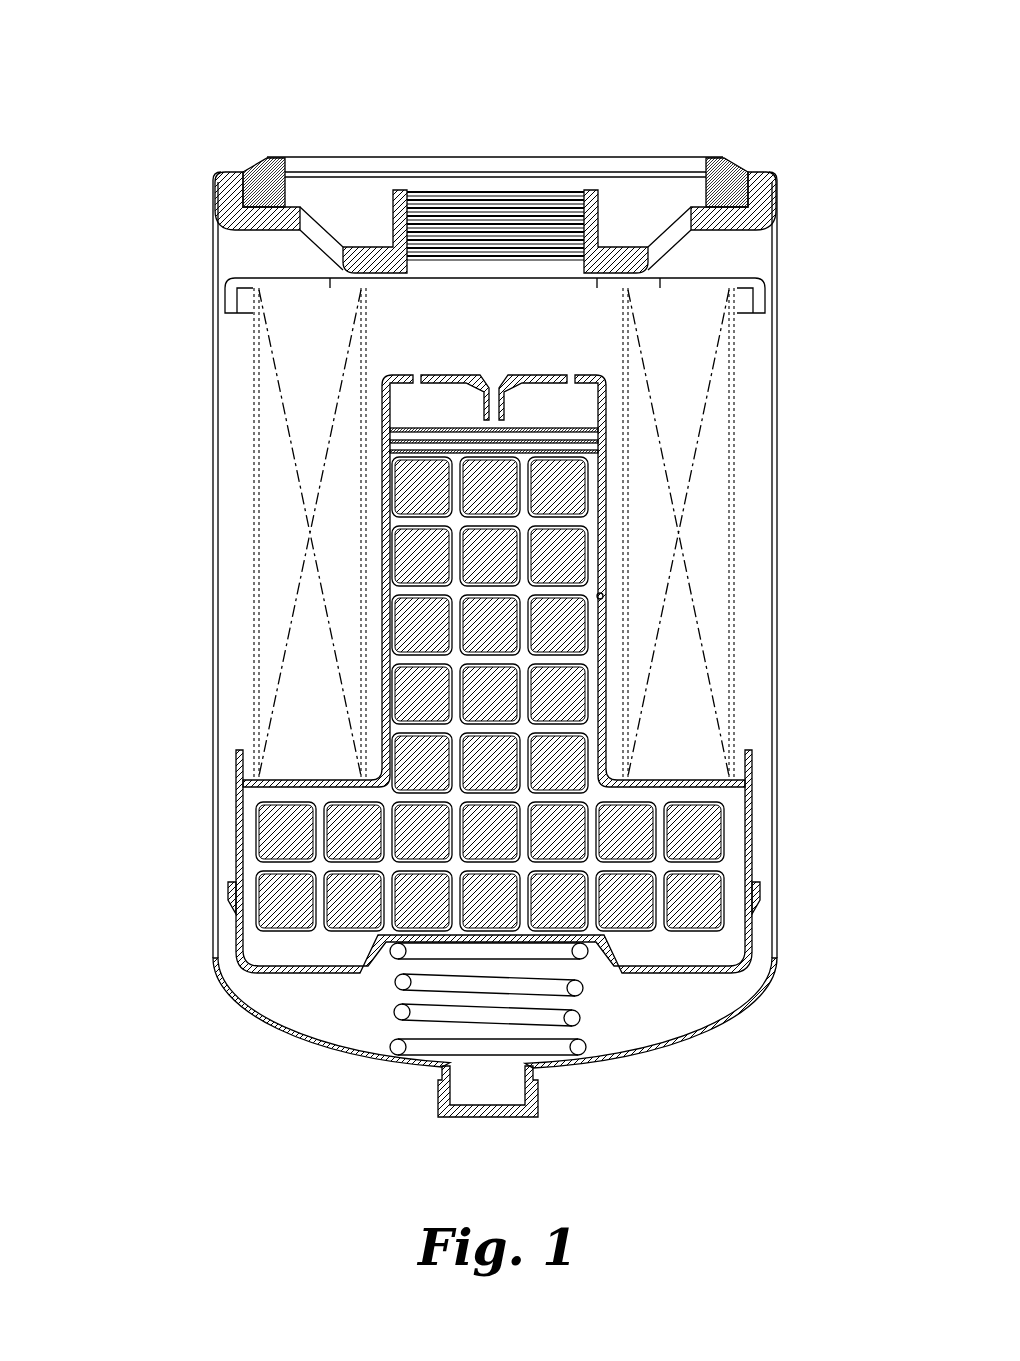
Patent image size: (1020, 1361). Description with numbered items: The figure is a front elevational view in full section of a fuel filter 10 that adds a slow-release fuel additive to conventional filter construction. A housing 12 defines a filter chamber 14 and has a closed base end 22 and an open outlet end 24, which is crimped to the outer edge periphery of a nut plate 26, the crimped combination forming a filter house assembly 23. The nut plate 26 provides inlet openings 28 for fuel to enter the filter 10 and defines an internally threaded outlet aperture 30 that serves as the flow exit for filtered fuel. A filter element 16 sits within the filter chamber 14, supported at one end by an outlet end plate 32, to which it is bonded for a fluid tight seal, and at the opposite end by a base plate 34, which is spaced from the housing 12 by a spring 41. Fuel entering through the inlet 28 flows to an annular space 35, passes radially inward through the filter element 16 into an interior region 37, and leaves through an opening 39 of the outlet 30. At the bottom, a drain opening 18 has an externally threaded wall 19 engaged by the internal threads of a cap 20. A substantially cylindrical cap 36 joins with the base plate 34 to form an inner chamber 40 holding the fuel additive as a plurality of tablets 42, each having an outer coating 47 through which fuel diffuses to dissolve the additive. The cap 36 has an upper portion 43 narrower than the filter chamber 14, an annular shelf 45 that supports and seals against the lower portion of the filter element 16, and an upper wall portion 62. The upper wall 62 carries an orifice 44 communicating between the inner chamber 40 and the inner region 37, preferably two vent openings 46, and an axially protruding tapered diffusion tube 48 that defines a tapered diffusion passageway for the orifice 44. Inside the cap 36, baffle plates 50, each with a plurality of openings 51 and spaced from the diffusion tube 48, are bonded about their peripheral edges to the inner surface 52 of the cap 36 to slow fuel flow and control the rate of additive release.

The fuel filter 10 is at (191, 49).
The housing 12 is at (210, 270).
The filter chamber 14 is at (230, 245).
The filter element 16 is at (316, 371).
The drain opening 18 is at (450, 1070).
The externally threaded wall 19 is at (533, 1073).
The cap 20 is at (492, 1118).
The closed base end 22 is at (327, 1057).
The filter house assembly 23 is at (172, 519).
The open outlet end 24 is at (581, 112).
The nut plate 26 is at (617, 257).
The inlet openings 28 is at (313, 232).
The internally threaded outlet aperture 30 is at (445, 205).
The outlet end plate 32 is at (700, 273).
The base plate 34 is at (240, 968).
The annular space 35 is at (230, 352).
The cap 36 is at (390, 633).
The interior region 37 is at (600, 373).
The opening 39 is at (495, 268).
The inner chamber 40 is at (397, 657).
The spring 41 is at (582, 1022).
The tablets or pellets 42 is at (397, 490).
The upper portion 43 is at (377, 727).
The orifice 44 is at (503, 423).
The annular shelf 45 is at (683, 777).
The vent openings 46 is at (412, 374).
The outer coating 47 is at (397, 557).
The diffusion tube 48 is at (500, 420).
The baffle plate 50 is at (437, 427).
The openings 51 is at (397, 441).
The inner surface 52 is at (605, 596).
The upper wall portion 62 is at (440, 374).